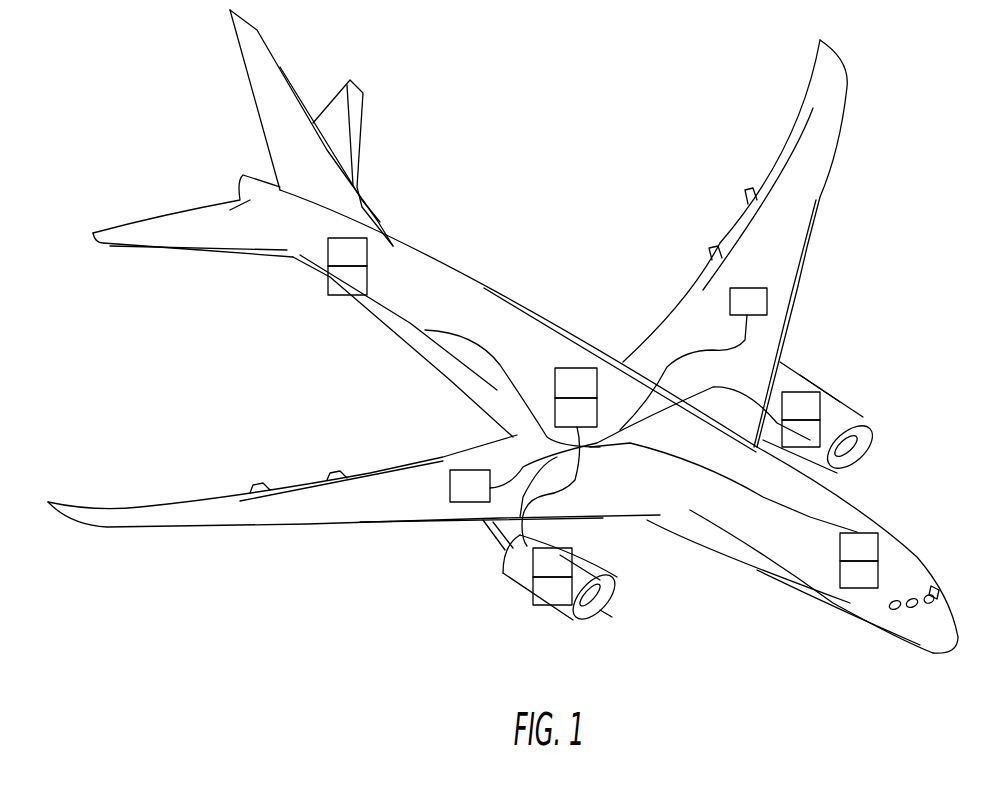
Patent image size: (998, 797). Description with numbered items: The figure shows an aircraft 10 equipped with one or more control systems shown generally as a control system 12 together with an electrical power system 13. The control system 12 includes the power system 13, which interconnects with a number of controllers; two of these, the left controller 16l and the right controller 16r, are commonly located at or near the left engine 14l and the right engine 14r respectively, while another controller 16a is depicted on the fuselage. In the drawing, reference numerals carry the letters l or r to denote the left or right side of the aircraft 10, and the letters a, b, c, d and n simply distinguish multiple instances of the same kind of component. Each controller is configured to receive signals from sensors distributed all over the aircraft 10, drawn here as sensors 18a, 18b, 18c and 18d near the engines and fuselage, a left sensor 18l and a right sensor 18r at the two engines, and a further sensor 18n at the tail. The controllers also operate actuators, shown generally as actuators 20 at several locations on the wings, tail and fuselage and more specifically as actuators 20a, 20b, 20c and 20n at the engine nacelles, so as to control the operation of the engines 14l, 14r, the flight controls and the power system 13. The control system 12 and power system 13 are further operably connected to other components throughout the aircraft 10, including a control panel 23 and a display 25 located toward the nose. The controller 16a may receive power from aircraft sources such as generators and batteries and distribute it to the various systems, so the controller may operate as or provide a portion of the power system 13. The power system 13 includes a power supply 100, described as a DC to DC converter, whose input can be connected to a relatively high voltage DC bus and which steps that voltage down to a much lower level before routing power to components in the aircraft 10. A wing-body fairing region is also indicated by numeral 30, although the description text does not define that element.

The aircraft 10 is at (193, 610).
The control system 12 is at (530, 357).
The power system 13 is at (507, 347).
The power supply 100 is at (598, 352).
The wing-body fairing 30 is at (473, 358).
The left engine 14l is at (840, 409).
The right engine 14r is at (580, 602).
The controller 16a is at (576, 383).
The left controller 16l is at (801, 433).
The right controller 16r is at (552, 591).
The sensor 18a is at (605, 607).
The sensor 18b is at (617, 593).
The sensor 18c is at (860, 403).
The sensor 18d is at (559, 472).
The left sensor 18l is at (801, 406).
The sensor 18n is at (347, 252).
The right sensor 18r is at (552, 562).
The actuator 20 is at (547, 384).
The actuator 20a is at (573, 627).
The actuator 20b is at (597, 620).
The actuator 20c is at (850, 470).
The actuator 20n is at (870, 445).
The control panel 23 is at (859, 574).
The display 25 is at (859, 547).